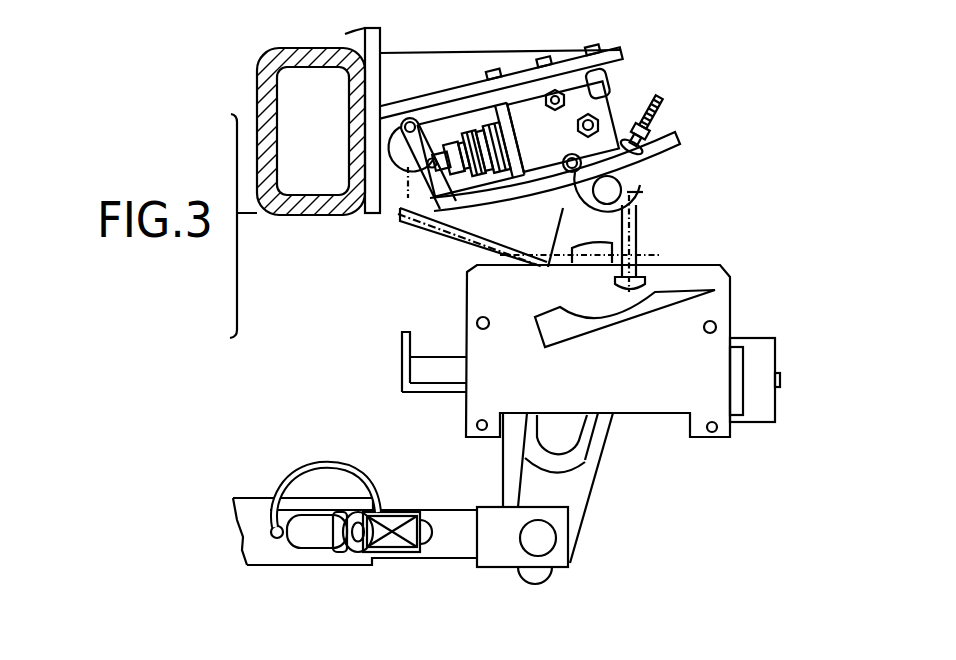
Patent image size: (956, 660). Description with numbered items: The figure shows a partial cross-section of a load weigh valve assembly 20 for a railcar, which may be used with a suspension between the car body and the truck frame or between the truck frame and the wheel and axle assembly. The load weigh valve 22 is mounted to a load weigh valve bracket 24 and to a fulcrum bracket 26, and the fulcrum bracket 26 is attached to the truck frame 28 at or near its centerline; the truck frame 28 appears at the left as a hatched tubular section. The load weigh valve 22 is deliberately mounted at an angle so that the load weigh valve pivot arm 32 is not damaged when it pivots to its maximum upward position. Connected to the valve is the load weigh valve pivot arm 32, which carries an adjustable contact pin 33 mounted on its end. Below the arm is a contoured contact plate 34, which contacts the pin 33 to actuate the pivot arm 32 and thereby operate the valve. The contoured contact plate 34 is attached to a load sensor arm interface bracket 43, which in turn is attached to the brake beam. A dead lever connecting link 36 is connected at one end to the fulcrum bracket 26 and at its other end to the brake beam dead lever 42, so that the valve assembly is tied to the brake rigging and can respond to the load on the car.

The load weigh valve assembly 20 is at (740, 138).
The load weigh valve 22 is at (626, 94).
The load weigh valve bracket 24 is at (572, 47).
The fulcrum bracket 26 is at (388, 195).
The truck frame 28 is at (250, 62).
The load weigh valve pivot arm 32 is at (660, 168).
The adjustable contact pin 33 is at (657, 113).
The contoured contact plate 34 is at (722, 291).
The dead lever connecting link 36 is at (632, 193).
The brake beam dead lever 42 is at (548, 233).
The load sensor arm interface bracket 43 is at (738, 308).